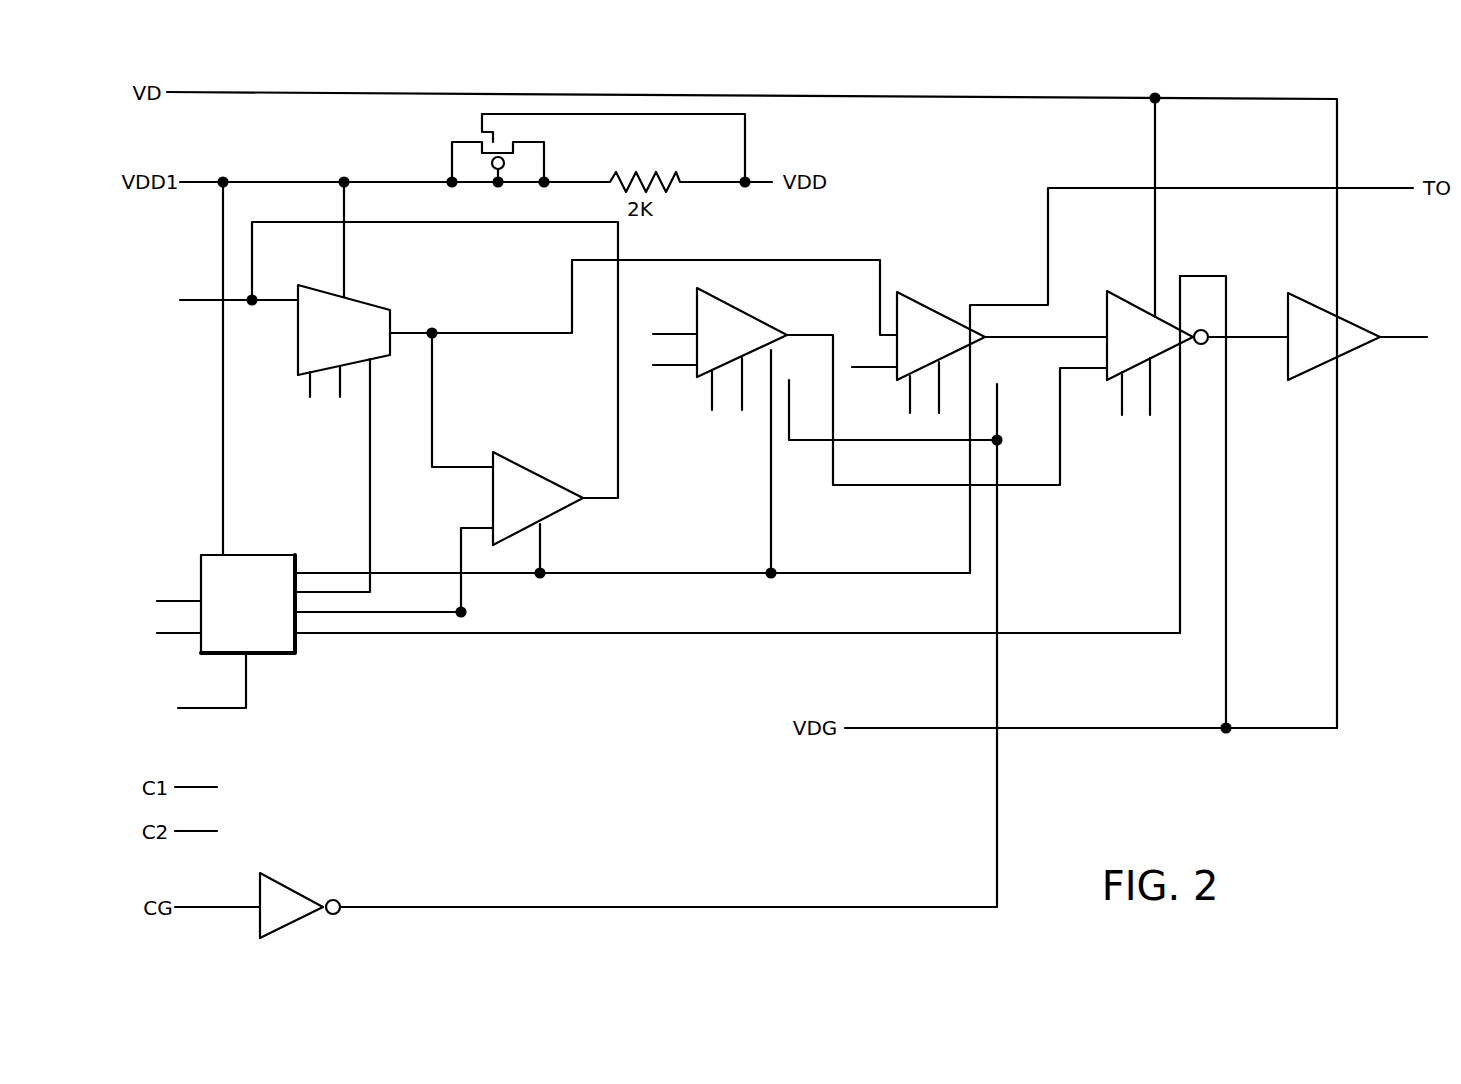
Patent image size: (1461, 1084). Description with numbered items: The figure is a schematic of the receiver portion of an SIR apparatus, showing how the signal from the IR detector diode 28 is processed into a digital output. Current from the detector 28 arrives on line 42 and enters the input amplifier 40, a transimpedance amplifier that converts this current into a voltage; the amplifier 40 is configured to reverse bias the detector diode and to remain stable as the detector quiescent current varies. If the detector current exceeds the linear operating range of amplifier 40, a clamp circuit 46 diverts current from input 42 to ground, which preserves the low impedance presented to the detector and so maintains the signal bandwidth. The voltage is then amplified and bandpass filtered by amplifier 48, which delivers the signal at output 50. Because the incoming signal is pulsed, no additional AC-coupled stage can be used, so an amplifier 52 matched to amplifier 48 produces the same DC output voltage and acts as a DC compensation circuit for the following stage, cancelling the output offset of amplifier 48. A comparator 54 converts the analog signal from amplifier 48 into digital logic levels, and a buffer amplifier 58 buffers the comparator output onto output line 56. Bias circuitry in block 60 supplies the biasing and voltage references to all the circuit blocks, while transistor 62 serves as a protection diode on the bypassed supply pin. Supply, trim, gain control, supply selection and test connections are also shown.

The IR detector diode 28 is at (202, 327).
The input amplifier 40 is at (360, 298).
The line 42 is at (272, 298).
The clamp circuit 46 is at (537, 470).
The amplifier 48 is at (925, 303).
The output 50 is at (1060, 337).
The amplifier 52 is at (733, 305).
The comparator 54 is at (1133, 300).
The output line 56 is at (1405, 332).
The buffer amplifier 58 is at (1320, 300).
The bias circuitry 60 is at (240, 552).
The transistor 62 is at (553, 155).